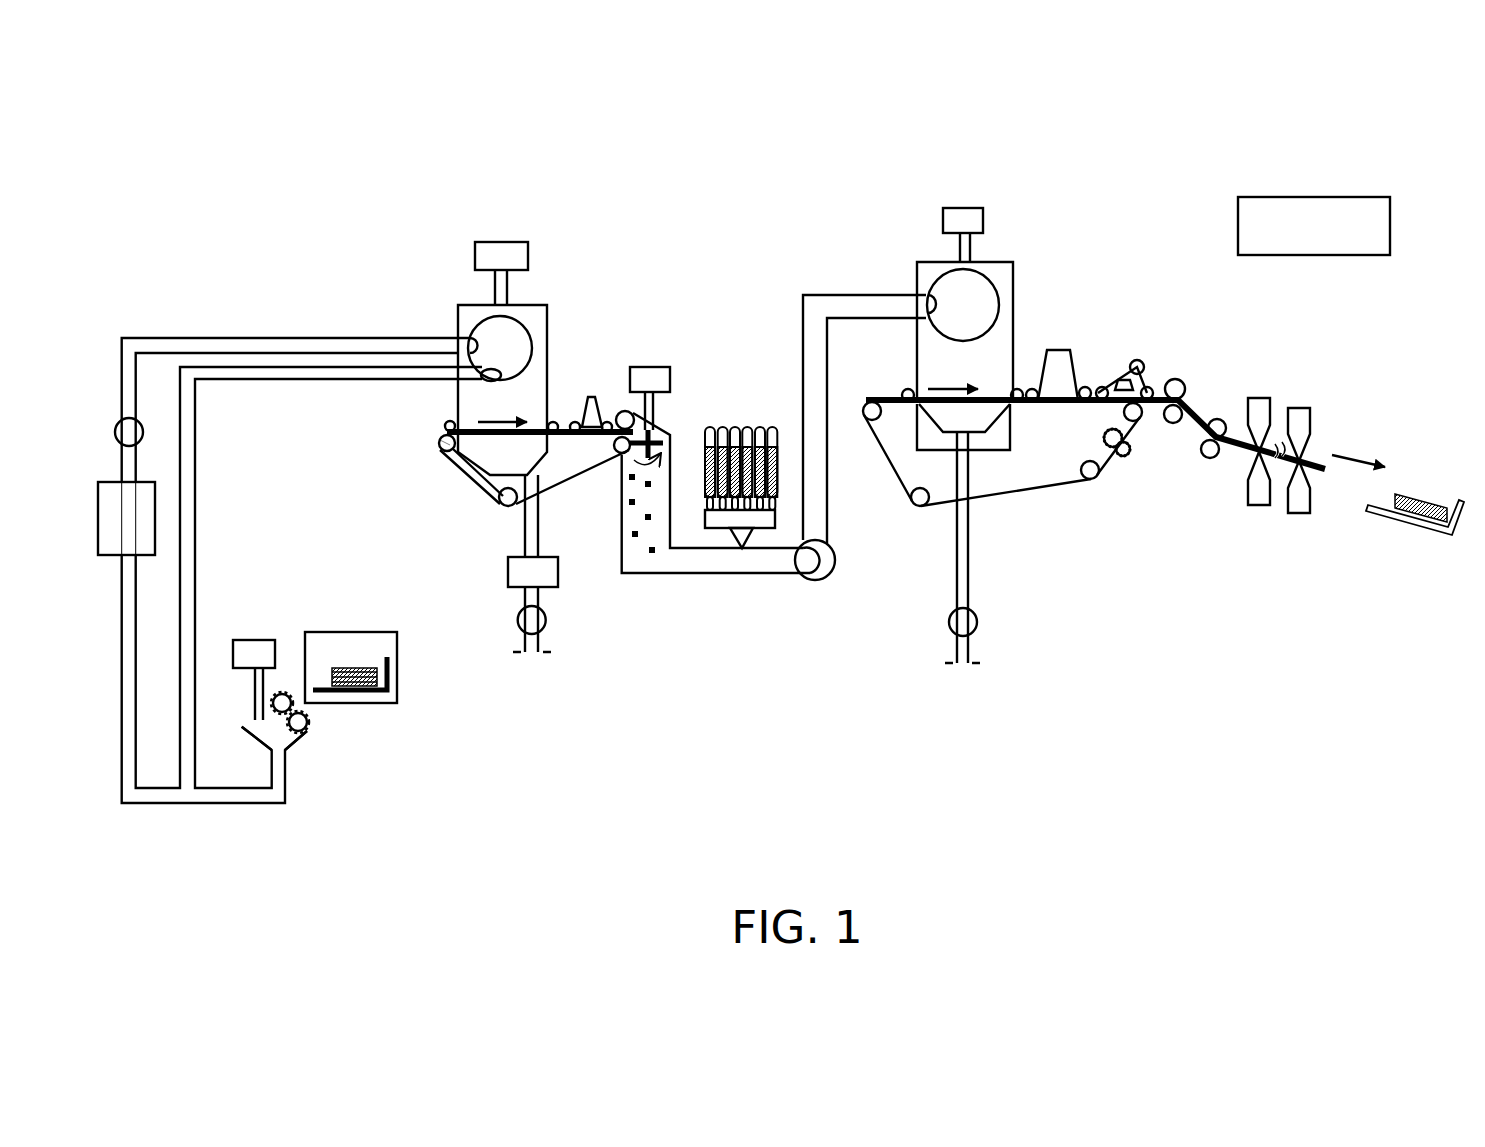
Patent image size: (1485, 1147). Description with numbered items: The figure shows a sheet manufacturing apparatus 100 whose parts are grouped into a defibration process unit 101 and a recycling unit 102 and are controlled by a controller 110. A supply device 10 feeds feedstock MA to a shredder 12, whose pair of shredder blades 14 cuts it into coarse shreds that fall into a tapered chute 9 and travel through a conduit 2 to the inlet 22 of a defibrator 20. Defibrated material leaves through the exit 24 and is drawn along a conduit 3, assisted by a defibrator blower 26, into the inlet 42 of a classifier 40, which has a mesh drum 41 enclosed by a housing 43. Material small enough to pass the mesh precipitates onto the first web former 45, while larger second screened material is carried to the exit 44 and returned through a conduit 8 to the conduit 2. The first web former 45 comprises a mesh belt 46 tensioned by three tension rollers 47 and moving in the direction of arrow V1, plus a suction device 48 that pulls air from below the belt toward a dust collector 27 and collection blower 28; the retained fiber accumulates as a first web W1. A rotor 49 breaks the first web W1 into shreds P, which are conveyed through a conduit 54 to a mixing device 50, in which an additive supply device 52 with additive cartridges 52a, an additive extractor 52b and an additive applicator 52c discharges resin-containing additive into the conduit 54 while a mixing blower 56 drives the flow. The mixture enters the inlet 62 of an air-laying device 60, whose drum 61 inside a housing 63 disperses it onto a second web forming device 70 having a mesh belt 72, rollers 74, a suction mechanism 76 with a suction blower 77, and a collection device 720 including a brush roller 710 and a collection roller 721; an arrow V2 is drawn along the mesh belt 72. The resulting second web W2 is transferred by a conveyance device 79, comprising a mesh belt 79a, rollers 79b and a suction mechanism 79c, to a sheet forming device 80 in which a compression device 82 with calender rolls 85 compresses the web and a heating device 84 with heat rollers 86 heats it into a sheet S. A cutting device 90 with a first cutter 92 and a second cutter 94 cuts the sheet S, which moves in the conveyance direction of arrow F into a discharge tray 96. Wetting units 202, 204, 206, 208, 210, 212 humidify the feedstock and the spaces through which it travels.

The conduit 2 is at (234, 804).
The conduit 3 is at (192, 338).
The conduit 8 is at (275, 367).
The chute 9 is at (255, 743).
The supply device 10 is at (338, 632).
The shredder 12 is at (290, 687).
The shredder blades 14 is at (300, 732).
The defibrator 20 is at (143, 562).
The inlet 22 is at (130, 548).
The exit 24 is at (135, 485).
The defibrator blower 26 is at (136, 430).
The dust collector 27 is at (558, 575).
The collection blower 28 is at (546, 622).
The classifier 40 is at (562, 300).
The drum 41 is at (478, 326).
The inlet 42 is at (467, 340).
The housing 43 is at (515, 305).
The exit 44 is at (482, 380).
The first web former 45 is at (393, 470).
The mesh belt 46 is at (468, 480).
The tension rollers 47 is at (439, 444).
The suction device 48 is at (490, 478).
The rotor 49 is at (626, 453).
The mixing device 50 is at (792, 583).
The additive supply device 52 is at (717, 363).
The additive cartridges 52a is at (772, 427).
The additive extractor 52b is at (705, 518).
The additive applicator 52c is at (730, 542).
The conduit 54 is at (635, 560).
The mixing blower 56 is at (812, 582).
The air-laying device 60 is at (1030, 262).
The drum 61 is at (935, 278).
The inlet 62 is at (927, 298).
The housing 63 is at (998, 262).
The second web forming device 70 is at (1102, 487).
The mesh belt 72 is at (882, 403).
The rollers 74 is at (872, 421).
The suction mechanism 76 is at (1005, 420).
The suction blower 77 is at (949, 622).
The conveyance device 79 is at (1057, 275).
The mesh belt 79a is at (1106, 372).
The rollers 79b is at (1141, 359).
The suction mechanism 79c is at (1120, 378).
The sheet forming device 80 is at (1175, 325).
The compression device 82 is at (1177, 378).
The heating device 84 is at (1233, 417).
The calender rolls 85 is at (1186, 402).
The heat rollers 86 is at (1207, 456).
The cutting device 90 is at (1267, 334).
The first cutter 92 is at (1258, 394).
The second cutter 94 is at (1299, 403).
The discharge tray 96 is at (1452, 505).
The sheet manufacturing apparatus 100 is at (733, 197).
The defibration process unit 101 is at (372, 212).
The recycling unit 102 is at (1170, 182).
The controller 110 is at (1395, 240).
The wetting unit 202 is at (247, 640).
The wetting unit 204 is at (503, 241).
The wetting unit 206 is at (652, 367).
The wetting unit 208 is at (943, 222).
The wetting unit 210 is at (592, 397).
The wetting unit 212 is at (1058, 362).
The brush roller 710 is at (1104, 442).
The collection device 720 is at (1130, 468).
The collection roller 721 is at (1132, 447).
The first web W1 is at (440, 430).
The second web W2 is at (990, 414).
The arrow V1 is at (502, 406).
The second transport speed V2 is at (953, 371).
The shreds P is at (635, 540).
The feedstock MA is at (360, 668).
The sheet S is at (1432, 497).
The arrow F is at (1358, 450).